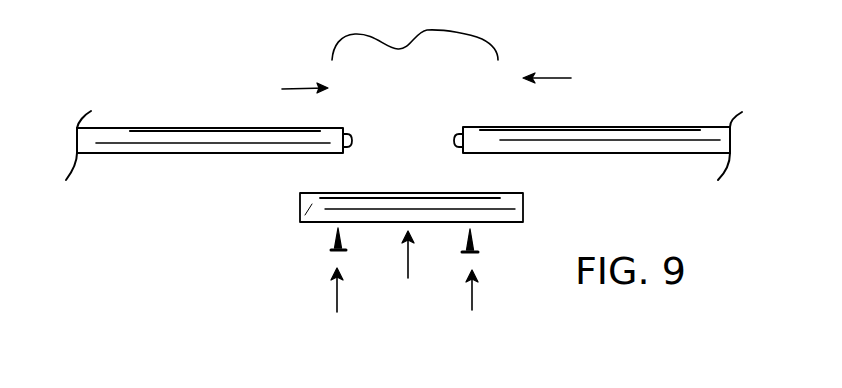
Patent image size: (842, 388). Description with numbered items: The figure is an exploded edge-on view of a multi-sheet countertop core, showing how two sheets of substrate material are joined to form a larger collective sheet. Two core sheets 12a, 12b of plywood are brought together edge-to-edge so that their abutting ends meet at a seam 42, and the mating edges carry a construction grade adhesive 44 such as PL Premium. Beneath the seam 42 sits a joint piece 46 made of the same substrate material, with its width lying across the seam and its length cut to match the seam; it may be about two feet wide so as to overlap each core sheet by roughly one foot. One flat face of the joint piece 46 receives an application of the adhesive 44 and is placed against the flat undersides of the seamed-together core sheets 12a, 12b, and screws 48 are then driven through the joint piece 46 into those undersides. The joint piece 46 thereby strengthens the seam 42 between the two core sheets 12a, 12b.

The core sheet 12a is at (649, 128).
The core sheet 12b is at (167, 128).
The seam 42 is at (426, 50).
The construction grade adhesive 44 is at (354, 138).
The joint piece 46 is at (300, 219).
The screws 48 is at (330, 243).